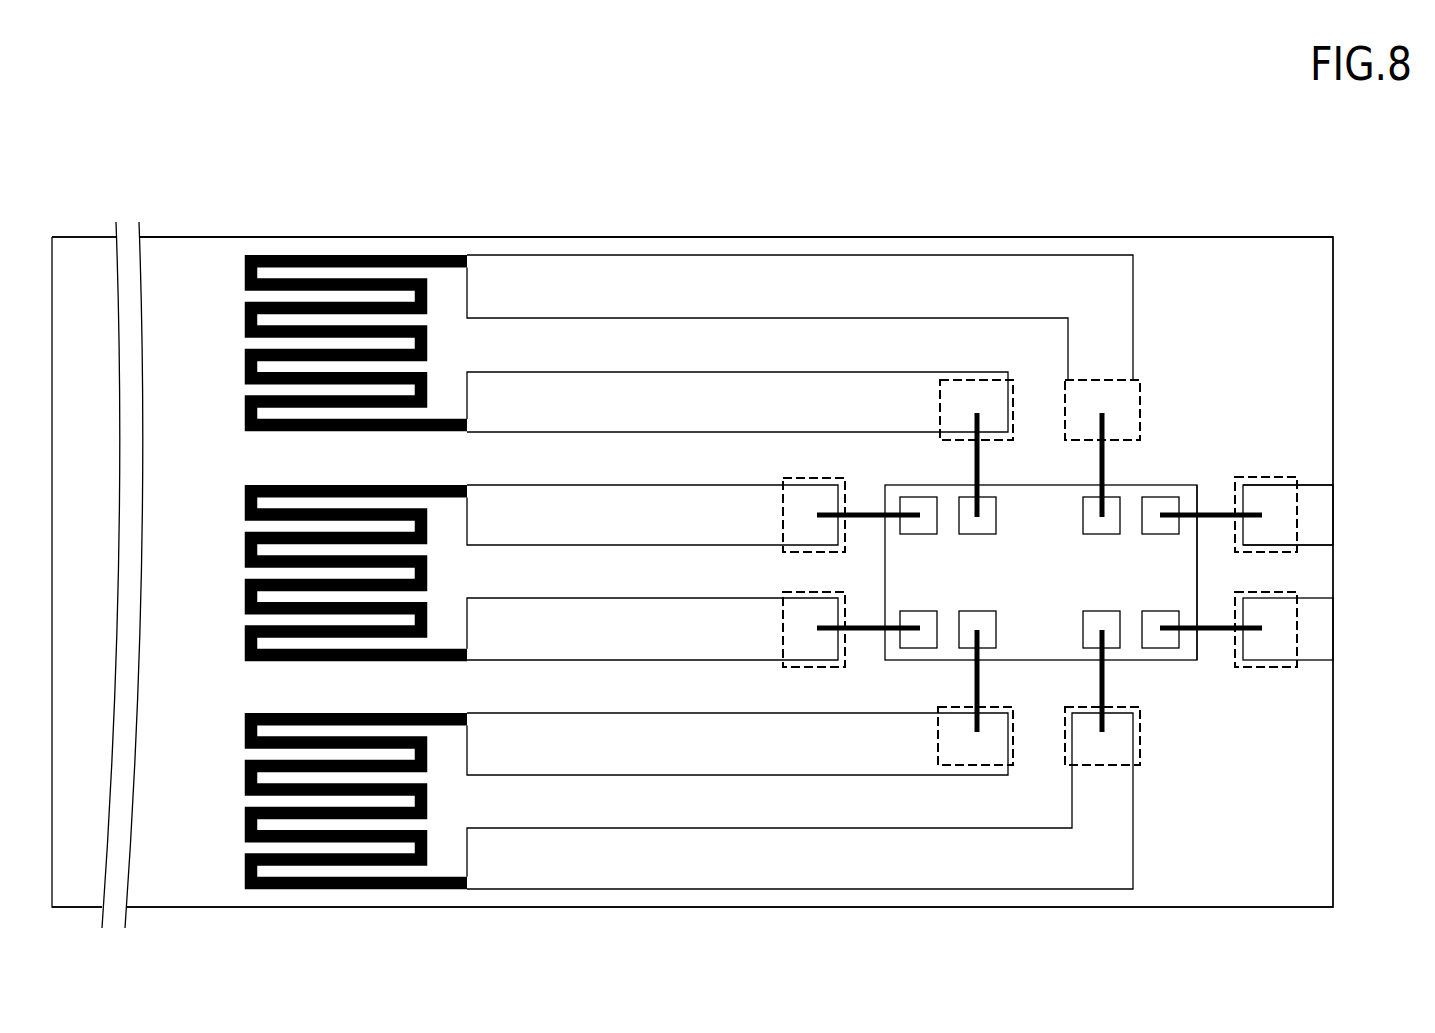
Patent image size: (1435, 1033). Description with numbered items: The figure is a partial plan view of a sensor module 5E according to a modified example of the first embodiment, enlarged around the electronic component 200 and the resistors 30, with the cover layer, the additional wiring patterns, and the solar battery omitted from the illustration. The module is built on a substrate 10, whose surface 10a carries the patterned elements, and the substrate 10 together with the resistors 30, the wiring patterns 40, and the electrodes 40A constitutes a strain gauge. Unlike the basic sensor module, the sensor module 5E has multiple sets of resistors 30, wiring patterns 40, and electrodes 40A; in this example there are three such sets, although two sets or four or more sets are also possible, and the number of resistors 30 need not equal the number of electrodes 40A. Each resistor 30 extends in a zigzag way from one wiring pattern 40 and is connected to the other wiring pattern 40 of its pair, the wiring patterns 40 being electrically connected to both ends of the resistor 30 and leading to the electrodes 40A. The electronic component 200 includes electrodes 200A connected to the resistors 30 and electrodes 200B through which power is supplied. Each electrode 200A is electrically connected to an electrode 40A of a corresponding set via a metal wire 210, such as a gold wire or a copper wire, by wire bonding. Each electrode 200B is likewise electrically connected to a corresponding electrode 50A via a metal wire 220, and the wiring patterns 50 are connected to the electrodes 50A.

The sensor module 5E is at (104, 105).
The substrate 10 is at (88, 226).
The main surface of substrate 10a is at (207, 243).
The resistor 30 is at (402, 263).
The wiring pattern 40 is at (800, 528).
The electrode 40A is at (1100, 380).
The wiring pattern 50 is at (1327, 549).
The electrode 50A is at (1280, 475).
The electronic component 200 is at (1094, 400).
The electrode 200A is at (1168, 503).
The electrode 200B is at (1210, 507).
The metal wire 210 is at (1110, 503).
The metal wire 220 is at (1212, 500).